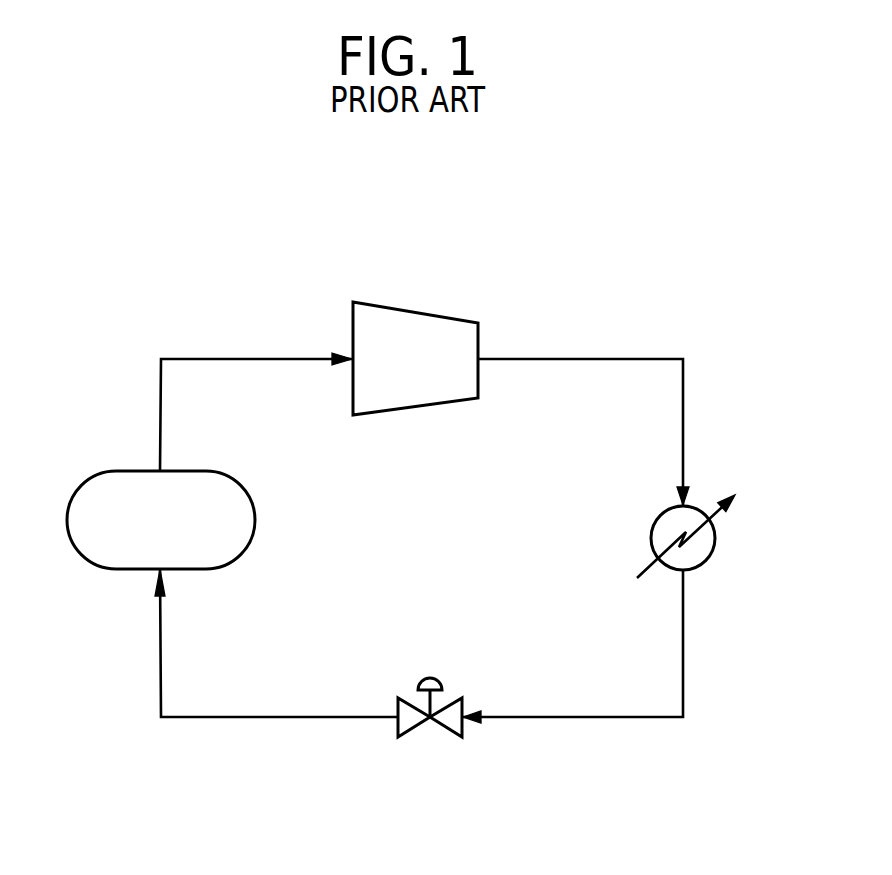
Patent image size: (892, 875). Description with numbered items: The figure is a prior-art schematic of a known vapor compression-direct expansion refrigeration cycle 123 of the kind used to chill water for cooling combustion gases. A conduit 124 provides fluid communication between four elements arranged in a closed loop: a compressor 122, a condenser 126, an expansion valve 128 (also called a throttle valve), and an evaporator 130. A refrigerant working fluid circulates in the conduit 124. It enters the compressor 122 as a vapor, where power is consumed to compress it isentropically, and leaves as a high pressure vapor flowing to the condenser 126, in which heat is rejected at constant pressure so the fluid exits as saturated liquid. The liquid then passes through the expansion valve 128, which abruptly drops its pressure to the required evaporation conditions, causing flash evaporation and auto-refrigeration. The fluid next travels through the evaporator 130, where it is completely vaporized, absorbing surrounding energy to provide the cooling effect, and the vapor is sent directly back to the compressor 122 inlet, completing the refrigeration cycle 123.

The compressor 122 is at (413, 312).
The vapor compression-direct expansion refrigeration cycle 123 is at (582, 225).
The conduit 124 is at (237, 358).
The condenser 126 is at (697, 507).
The expansion valve 128 is at (443, 710).
The evaporator 130 is at (248, 490).